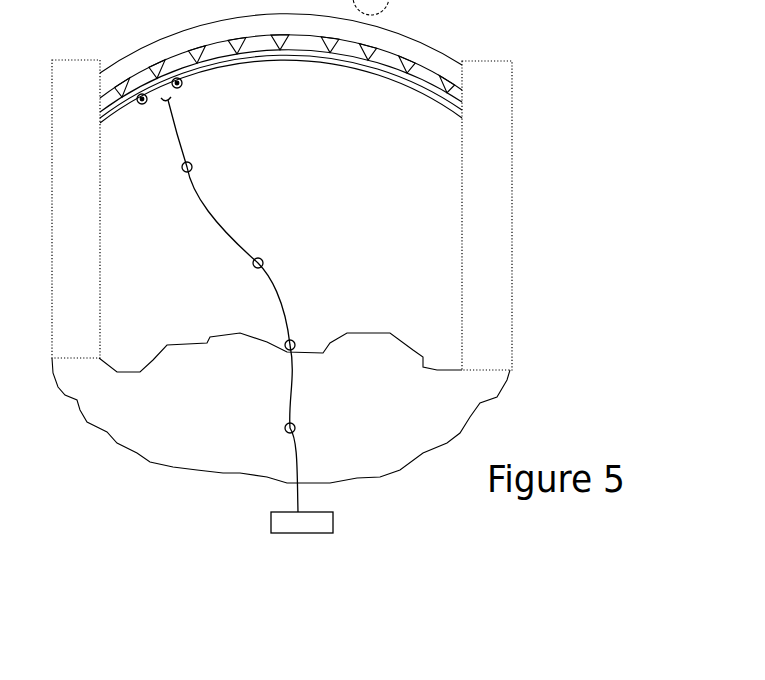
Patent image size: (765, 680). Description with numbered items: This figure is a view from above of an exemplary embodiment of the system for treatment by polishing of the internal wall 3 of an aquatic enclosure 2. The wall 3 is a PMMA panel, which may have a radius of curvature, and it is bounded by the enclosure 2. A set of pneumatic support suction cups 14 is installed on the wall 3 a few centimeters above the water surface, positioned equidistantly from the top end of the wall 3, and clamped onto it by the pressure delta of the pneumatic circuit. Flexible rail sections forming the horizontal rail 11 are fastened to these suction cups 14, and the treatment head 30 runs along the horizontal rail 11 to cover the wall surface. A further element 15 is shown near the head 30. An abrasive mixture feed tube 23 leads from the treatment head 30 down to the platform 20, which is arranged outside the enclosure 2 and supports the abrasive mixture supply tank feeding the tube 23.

The aquatic enclosure 2 is at (546, 145).
The internal wall 3 is at (163, 49).
The suction cups 14 is at (370, 53).
The horizontal rail 11 is at (303, 53).
The treatment head 30 is at (143, 122).
The sensor 15 is at (167, 90).
The abrasive mixture feed tube 23 is at (277, 283).
The platform 20 is at (310, 518).